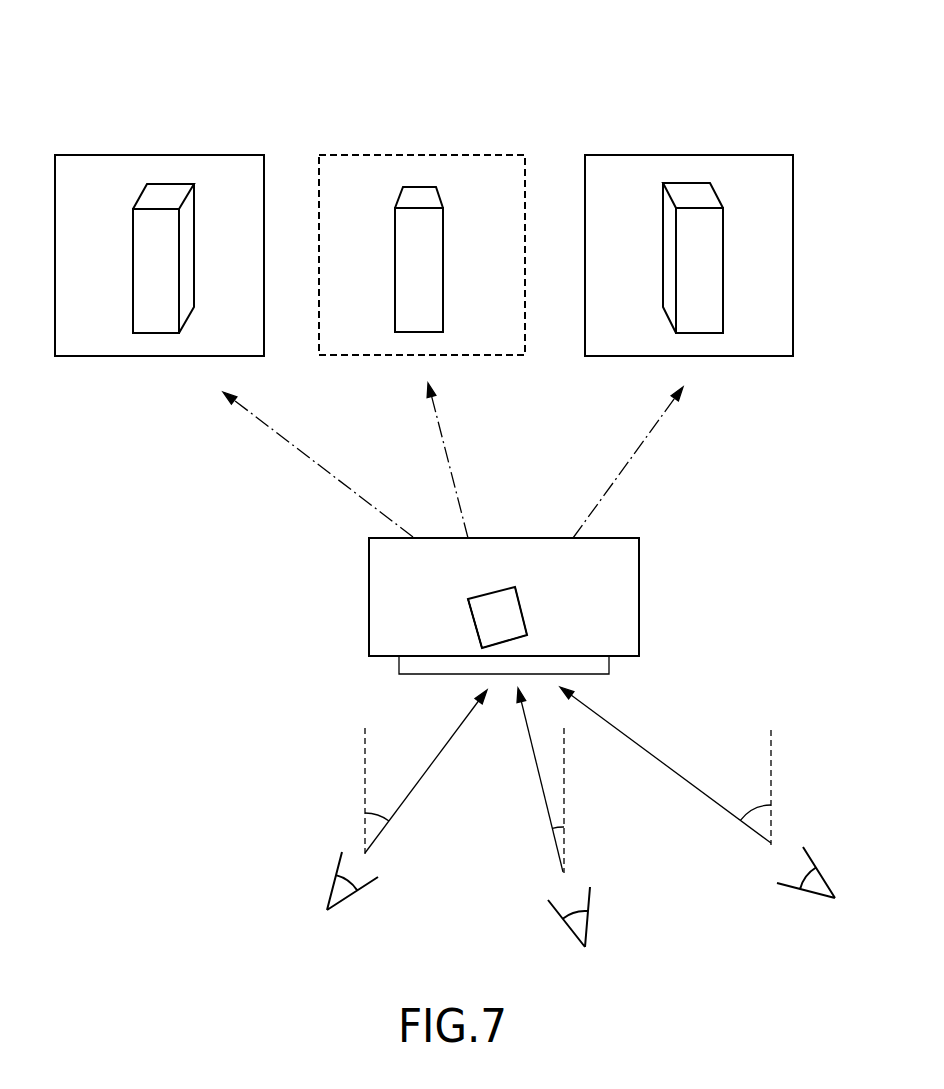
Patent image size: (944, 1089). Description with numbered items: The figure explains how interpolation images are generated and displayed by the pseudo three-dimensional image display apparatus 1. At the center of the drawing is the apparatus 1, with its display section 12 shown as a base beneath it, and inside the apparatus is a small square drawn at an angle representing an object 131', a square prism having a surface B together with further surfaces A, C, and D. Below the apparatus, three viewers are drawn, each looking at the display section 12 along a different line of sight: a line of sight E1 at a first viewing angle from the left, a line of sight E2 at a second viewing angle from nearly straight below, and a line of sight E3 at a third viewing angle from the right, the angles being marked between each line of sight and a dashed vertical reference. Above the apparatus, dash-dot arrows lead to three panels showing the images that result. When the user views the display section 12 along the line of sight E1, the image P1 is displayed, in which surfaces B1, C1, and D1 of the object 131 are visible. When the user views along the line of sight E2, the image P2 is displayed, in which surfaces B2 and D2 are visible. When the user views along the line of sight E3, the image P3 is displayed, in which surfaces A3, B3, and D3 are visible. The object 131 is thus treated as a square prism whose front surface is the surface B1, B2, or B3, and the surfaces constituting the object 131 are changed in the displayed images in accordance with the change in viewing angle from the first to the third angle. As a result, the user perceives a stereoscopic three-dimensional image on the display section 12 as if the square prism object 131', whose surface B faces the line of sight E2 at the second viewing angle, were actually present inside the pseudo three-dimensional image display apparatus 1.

The pseudo three-dimensional image display apparatus 1 is at (507, 538).
The display section 12 is at (609, 668).
The object 131 is at (481, 265).
The object (square prism) 131' is at (484, 653).
The face A of object A is at (525, 620).
The surface B is at (518, 637).
The face C of object C is at (475, 633).
The face D of object D is at (495, 620).
The surface A3 is at (186, 242).
The surface B3 is at (148, 290).
The surface D3 is at (166, 193).
The surface B2 is at (431, 243).
The surface D2 is at (425, 193).
The surface B1 is at (700, 263).
The surface C1 is at (667, 280).
The surface D1 is at (695, 193).
The image P1 is at (740, 357).
The image P2 is at (487, 357).
The image P3 is at (178, 357).
The line of sight E1 is at (402, 798).
The line of sight E2 is at (548, 808).
The line of sight E3 is at (680, 777).